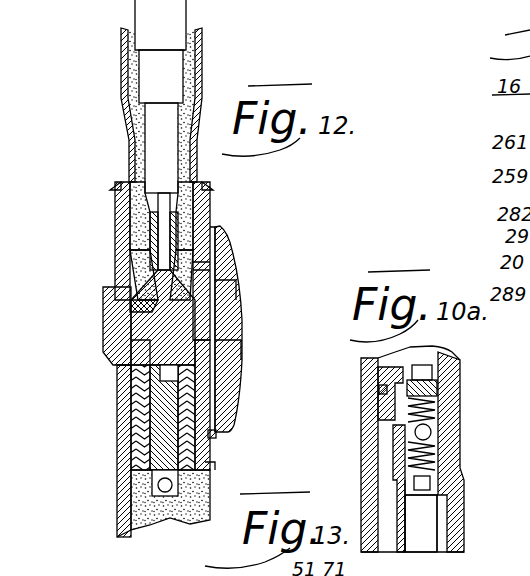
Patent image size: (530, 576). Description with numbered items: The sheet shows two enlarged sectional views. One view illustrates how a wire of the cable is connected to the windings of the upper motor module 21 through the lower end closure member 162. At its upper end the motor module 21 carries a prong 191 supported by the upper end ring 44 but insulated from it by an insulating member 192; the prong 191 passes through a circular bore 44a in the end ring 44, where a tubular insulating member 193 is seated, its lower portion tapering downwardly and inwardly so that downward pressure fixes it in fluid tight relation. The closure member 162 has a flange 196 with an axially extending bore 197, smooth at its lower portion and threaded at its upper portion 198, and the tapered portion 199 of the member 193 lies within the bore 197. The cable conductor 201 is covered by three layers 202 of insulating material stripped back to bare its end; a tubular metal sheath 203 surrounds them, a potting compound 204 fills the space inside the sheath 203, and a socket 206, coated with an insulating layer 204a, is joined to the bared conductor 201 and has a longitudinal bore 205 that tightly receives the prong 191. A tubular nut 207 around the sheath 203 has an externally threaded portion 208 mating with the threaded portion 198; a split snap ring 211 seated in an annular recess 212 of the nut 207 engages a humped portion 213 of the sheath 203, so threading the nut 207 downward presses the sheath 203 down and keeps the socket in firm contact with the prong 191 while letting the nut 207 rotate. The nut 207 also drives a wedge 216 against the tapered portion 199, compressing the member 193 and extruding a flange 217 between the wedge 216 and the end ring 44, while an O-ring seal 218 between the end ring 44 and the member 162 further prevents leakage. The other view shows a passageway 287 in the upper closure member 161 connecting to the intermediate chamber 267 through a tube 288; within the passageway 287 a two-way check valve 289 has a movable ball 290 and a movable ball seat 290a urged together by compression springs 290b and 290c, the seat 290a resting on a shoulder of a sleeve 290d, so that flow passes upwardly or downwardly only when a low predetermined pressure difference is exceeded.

In FIG. 12, the upper motor module 21 is at (114, 497).
In FIG. 12, the upper end ring 44 is at (205, 440).
In FIG. 12, the circular bore 44a is at (240, 398).
In FIG. 10a, the upper closure member 161 is at (462, 535).
In FIG. 12, the lower end closure member 162 is at (241, 310).
In FIG. 12, the prong 191 is at (132, 445).
In FIG. 12, the insulating member 192 is at (203, 463).
In FIG. 12, the tubular insulating member 193 is at (140, 406).
In FIG. 12, the flange 196 is at (118, 350).
In FIG. 12, the bore 197 is at (236, 340).
In FIG. 12, the threaded portion 198 is at (104, 298).
In FIG. 12, the tapered portion 199 is at (117, 375).
In FIG. 12, the conductor 201 is at (210, 217).
In FIG. 12, the layers of protecting and insulating material 202 is at (175, 20).
In FIG. 12, the tubular metal sheath 203 is at (203, 75).
In FIG. 12, the potting compound 204 is at (121, 88).
In FIG. 12, the layer of insulating material 204a is at (132, 235).
In FIG. 12, the longitudinal bore 205 is at (207, 368).
In FIG. 12, the socket 206 is at (205, 270).
In FIG. 12, the tubular nut 207 is at (116, 200).
In FIG. 12, the externally threaded portion 208 is at (232, 292).
In FIG. 12, the split snap ring 211 is at (150, 262).
In FIG. 12, the annular recess 212 is at (224, 250).
In FIG. 12, the humped portion 213 is at (155, 292).
In FIG. 12, the wedge 216 is at (131, 324).
In FIG. 12, the flange 217 is at (128, 380).
In FIG. 12, the O-ring seal 218 is at (215, 378).
In FIG. 10a, the intermediate chamber 267 is at (406, 545).
In FIG. 10a, the passageway 287 is at (450, 445).
In FIG. 10a, the tube 288 is at (430, 548).
In FIG. 10a, the two-way check valve 289 is at (438, 452).
In FIG. 10a, the movable ball 290 is at (400, 446).
In FIG. 10a, the movable ball seat 290a is at (396, 422).
In FIG. 10a, the compression spring 290b is at (432, 432).
In FIG. 10a, the compression spring 290c is at (380, 390).
In FIG. 10a, the sleeve 290d is at (432, 484).